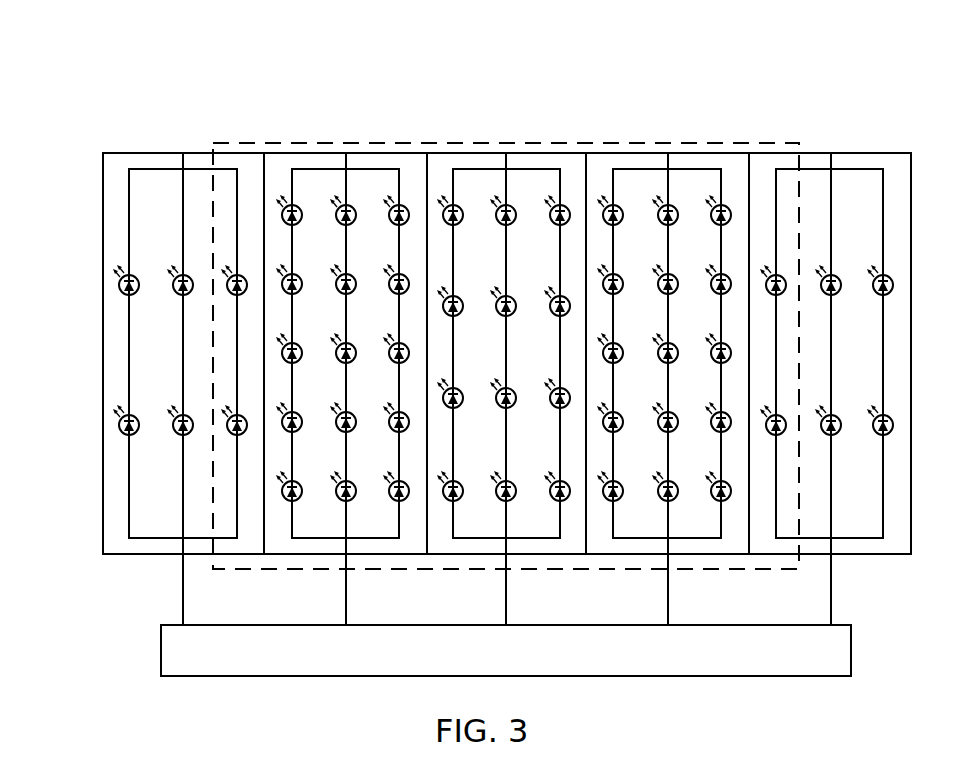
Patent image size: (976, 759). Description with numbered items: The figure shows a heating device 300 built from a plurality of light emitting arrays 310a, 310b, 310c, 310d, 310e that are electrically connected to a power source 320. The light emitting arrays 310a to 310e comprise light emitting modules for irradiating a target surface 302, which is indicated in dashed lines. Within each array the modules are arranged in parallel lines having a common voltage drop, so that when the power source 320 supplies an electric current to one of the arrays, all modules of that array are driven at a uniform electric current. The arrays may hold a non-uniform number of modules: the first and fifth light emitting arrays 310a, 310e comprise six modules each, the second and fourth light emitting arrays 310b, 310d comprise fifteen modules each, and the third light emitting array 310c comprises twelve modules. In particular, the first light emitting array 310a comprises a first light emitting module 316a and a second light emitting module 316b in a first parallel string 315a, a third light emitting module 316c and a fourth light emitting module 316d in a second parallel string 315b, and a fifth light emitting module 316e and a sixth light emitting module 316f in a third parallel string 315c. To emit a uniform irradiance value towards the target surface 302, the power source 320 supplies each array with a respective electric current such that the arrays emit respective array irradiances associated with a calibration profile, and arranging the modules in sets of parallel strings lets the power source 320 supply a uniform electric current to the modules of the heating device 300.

The heating device 300 is at (476, 120).
The target surface 302 is at (800, 568).
The first light emitting array 310a is at (156, 334).
The second light emitting array 310b is at (320, 188).
The third light emitting array 310c is at (567, 175).
The fourth light emitting array 310d is at (731, 177).
The fifth light emitting array 310e is at (895, 173).
The first parallel string 315a is at (128, 198).
The second parallel string 315b is at (183, 195).
The third parallel string 315c is at (236, 180).
The first light emitting module 316a is at (121, 291).
The second light emitting module 316b is at (121, 431).
The third light emitting module 316c is at (180, 293).
The fourth light emitting module 316d is at (180, 433).
The fifth light emitting module 316e is at (238, 278).
The sixth light emitting module 316f is at (238, 436).
The power source 320 is at (161, 650).